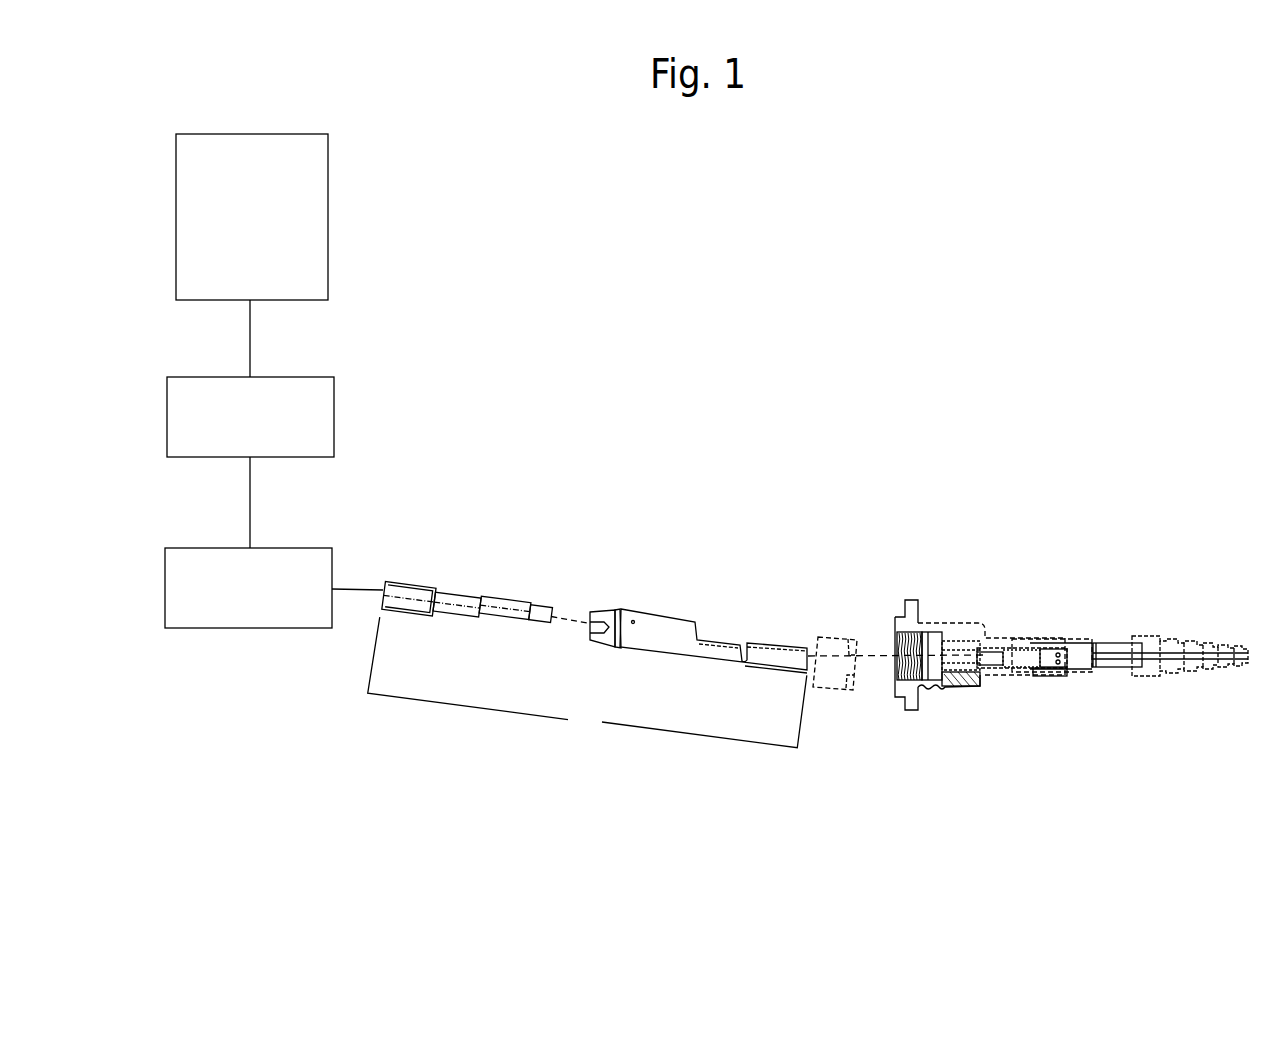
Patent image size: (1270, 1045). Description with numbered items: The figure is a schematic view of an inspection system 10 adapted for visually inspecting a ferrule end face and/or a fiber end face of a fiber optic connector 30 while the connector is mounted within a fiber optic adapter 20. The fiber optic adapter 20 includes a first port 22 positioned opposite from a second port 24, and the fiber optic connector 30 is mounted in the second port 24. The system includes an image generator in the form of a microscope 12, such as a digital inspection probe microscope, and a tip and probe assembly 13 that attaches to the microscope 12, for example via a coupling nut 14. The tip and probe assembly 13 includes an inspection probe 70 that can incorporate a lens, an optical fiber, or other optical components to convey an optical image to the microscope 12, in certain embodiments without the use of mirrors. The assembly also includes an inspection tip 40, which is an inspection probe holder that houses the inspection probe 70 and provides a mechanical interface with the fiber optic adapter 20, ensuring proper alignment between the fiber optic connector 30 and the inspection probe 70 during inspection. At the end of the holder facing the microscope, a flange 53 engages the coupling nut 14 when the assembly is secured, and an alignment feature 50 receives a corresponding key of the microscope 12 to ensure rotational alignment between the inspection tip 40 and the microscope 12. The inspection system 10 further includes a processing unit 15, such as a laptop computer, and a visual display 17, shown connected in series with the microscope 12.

The inspection system 10 is at (893, 139).
The microscope 12 is at (333, 552).
The tip and probe assembly 13 is at (587, 683).
The coupling nut 14 is at (818, 637).
The processing unit 15 is at (334, 412).
The visual display 17 is at (328, 255).
The fiber optic adapter 20 is at (937, 633).
The first port 22 is at (897, 645).
The second port 24 is at (1053, 672).
The fiber optic connector 30 is at (1108, 652).
The inspection tip 40 is at (645, 610).
The alignment feature 50 is at (590, 622).
The flange 53 is at (617, 610).
The inspection probe 70 is at (442, 593).